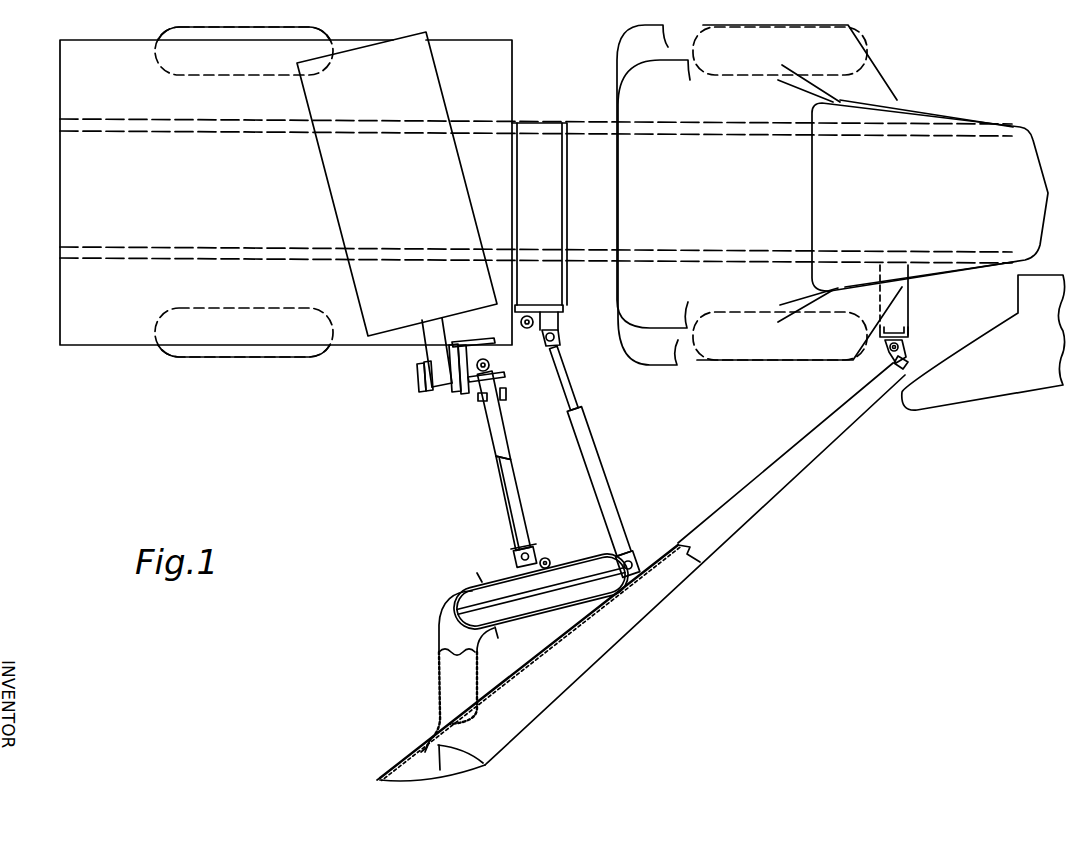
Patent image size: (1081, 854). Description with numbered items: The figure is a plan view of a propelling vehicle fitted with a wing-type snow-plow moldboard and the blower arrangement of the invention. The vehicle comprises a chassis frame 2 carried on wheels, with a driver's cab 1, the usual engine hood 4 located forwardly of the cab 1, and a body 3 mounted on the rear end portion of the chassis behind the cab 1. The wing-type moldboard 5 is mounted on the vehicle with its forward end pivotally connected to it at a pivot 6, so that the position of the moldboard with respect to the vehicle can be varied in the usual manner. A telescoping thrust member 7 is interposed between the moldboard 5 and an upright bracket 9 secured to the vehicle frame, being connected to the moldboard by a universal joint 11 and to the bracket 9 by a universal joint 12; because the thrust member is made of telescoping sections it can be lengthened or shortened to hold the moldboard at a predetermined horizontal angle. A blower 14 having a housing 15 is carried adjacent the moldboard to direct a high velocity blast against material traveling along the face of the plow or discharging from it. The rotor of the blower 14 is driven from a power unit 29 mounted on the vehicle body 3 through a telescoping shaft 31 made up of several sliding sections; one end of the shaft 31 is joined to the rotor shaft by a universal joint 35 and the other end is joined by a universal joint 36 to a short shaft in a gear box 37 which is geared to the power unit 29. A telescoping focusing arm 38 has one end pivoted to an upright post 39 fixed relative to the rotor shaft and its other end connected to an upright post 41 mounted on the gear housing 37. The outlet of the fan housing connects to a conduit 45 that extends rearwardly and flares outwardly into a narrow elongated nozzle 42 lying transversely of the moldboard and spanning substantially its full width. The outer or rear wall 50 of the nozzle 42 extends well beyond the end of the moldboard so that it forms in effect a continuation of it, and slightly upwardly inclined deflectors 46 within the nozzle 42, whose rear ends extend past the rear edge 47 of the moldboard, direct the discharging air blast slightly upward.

The driver's cab 1 is at (658, 177).
The chassis frame 2 is at (588, 257).
The body 3 is at (93, 203).
The engine hood 4 is at (956, 166).
The wing-type moldboard 5 is at (680, 552).
The pivotal connection 6 is at (913, 346).
The thrust member 7 is at (603, 483).
The upright bracket 9 is at (537, 312).
The universal joint 11 is at (638, 559).
The universal joint 12 is at (561, 340).
The blower 14 is at (584, 558).
The housing 15 is at (511, 591).
The power unit 29 is at (371, 183).
The telescoping shaft 31 is at (502, 492).
The universal joint 35 is at (514, 559).
The universal joint 36 is at (480, 400).
The gear box 37 is at (491, 366).
The telescoping focusing arm 38 is at (507, 438).
The upright post 39 is at (546, 558).
The upright post 41 is at (484, 358).
The nozzle 42 is at (428, 741).
The conduit 45 is at (453, 618).
The deflectors 46 is at (425, 752).
The rear edge 47 is at (441, 771).
The rear wall 50 is at (387, 778).